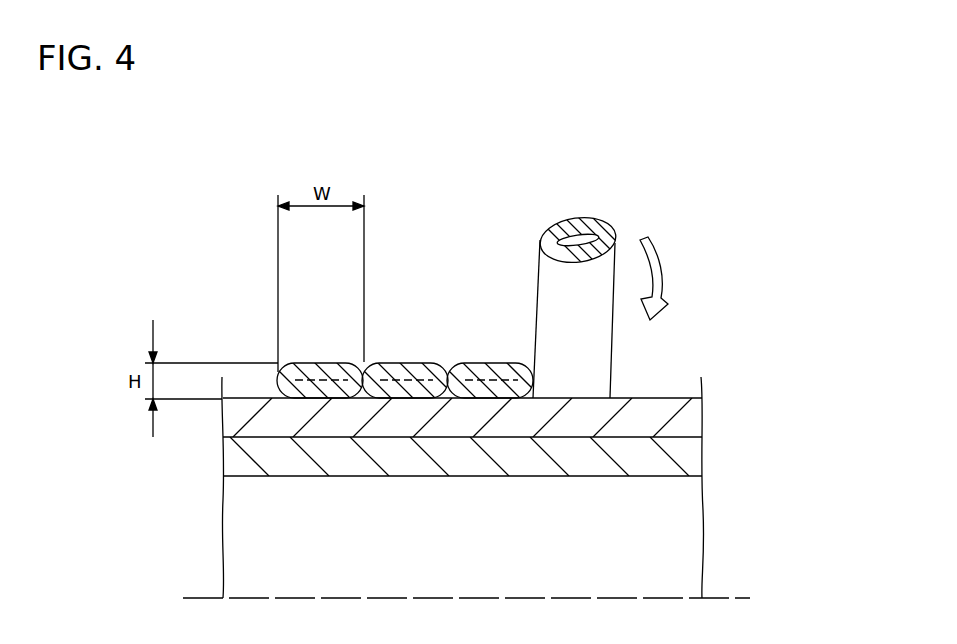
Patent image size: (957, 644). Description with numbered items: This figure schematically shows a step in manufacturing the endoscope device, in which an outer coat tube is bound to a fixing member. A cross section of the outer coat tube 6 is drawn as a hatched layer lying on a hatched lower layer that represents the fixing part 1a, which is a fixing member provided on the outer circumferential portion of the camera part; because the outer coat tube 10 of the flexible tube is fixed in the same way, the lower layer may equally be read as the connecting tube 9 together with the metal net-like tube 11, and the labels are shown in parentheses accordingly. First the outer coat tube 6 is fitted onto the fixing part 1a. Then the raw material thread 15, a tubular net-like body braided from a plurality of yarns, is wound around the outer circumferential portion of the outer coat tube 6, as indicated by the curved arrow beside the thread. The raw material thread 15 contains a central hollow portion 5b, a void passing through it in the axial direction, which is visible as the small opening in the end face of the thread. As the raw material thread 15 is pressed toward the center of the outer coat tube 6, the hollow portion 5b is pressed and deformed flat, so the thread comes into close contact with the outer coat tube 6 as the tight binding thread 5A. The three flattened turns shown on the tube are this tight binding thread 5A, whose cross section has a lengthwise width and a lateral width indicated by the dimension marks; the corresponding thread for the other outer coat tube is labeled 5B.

The tight binding thread 5A is at (367, 348).
The second partition wall (bead) 5B is at (320, 363).
The hollow portion 5b is at (606, 240).
The raw material thread 15 is at (550, 251).
The outer coat tube 6 is at (497, 417).
The outer coat tube 10 is at (687, 418).
The fixing part 1a is at (525, 465).
The connecting tube 9 is at (525, 465).
The metal net-like tube 11 is at (695, 450).